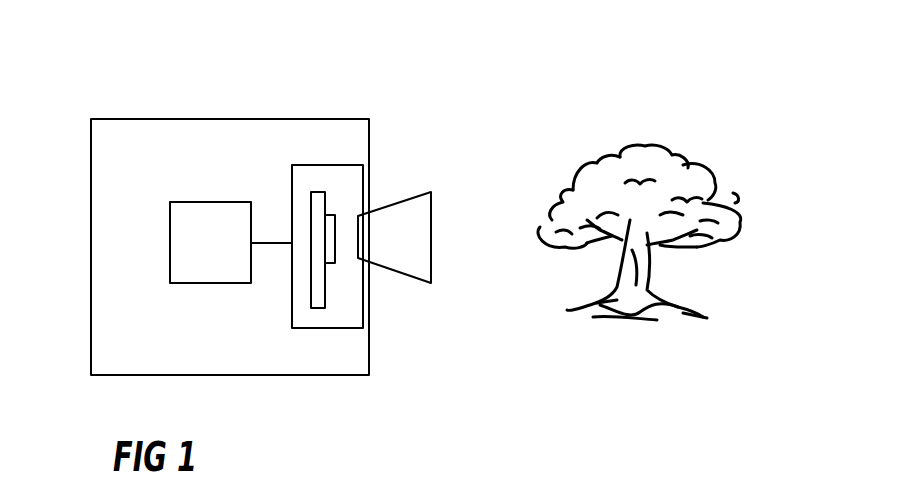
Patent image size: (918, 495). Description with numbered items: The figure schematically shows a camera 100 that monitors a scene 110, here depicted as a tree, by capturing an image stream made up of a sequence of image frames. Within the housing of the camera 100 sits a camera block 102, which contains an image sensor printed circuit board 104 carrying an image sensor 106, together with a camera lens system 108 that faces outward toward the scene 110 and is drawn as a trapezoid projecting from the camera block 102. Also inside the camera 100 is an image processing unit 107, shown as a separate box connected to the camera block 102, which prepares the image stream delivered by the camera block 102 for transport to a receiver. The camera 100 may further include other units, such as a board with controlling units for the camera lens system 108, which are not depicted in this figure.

The camera 100 is at (182, 118).
The camera block 102 is at (317, 165).
The image sensor printed circuit board 104 is at (317, 192).
The image sensor 106 is at (335, 263).
The image processing unit 107 is at (227, 202).
The camera lens system 108 is at (430, 193).
The scene 110 is at (712, 327).